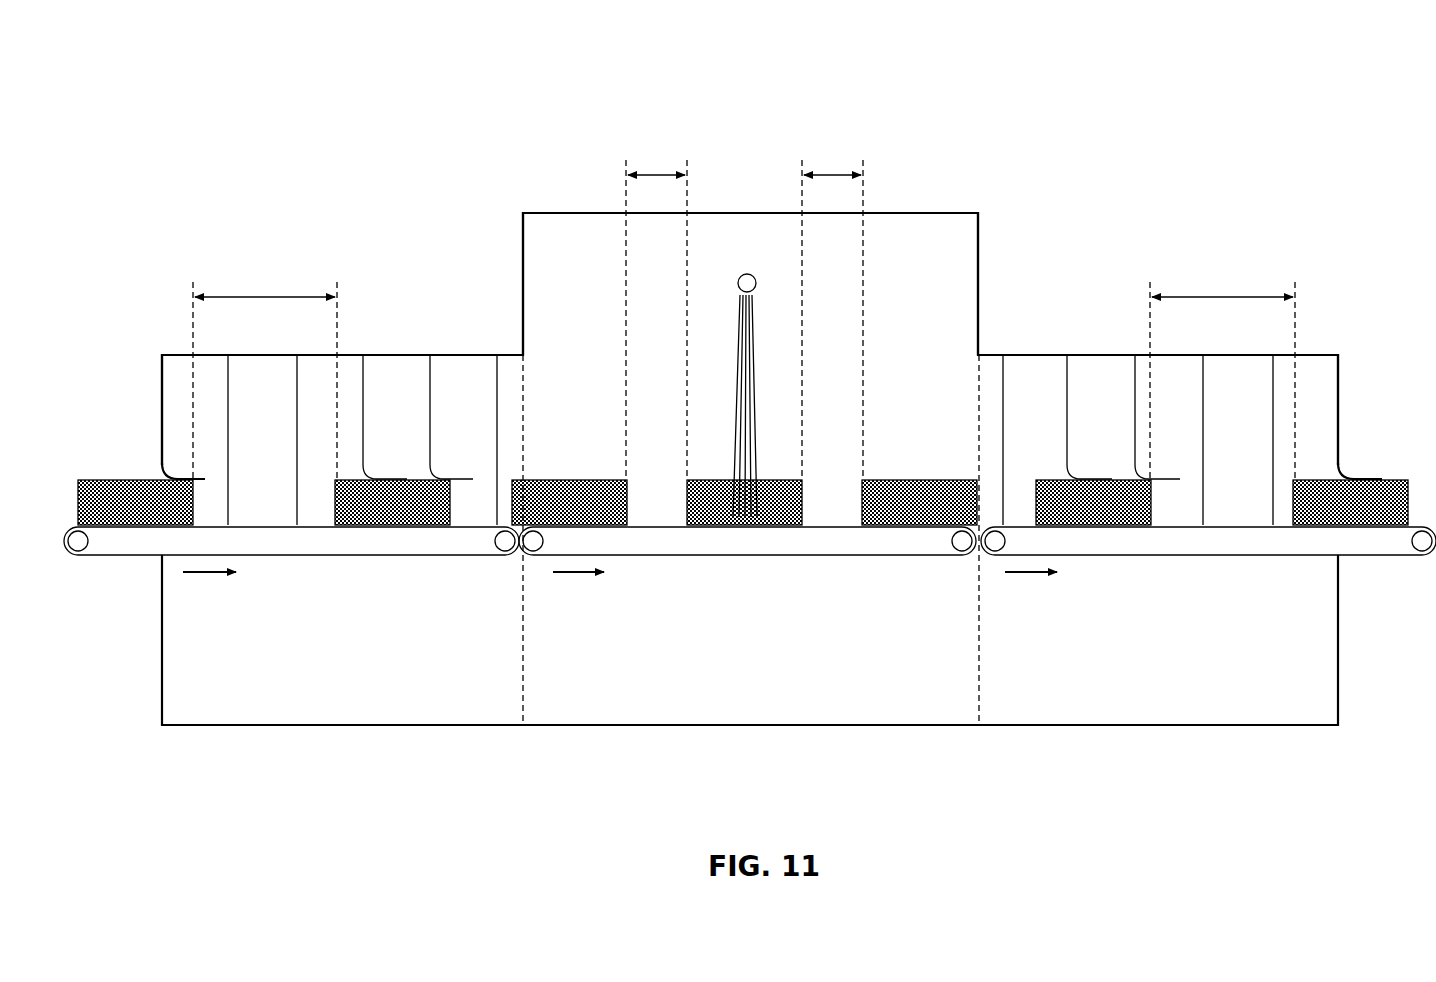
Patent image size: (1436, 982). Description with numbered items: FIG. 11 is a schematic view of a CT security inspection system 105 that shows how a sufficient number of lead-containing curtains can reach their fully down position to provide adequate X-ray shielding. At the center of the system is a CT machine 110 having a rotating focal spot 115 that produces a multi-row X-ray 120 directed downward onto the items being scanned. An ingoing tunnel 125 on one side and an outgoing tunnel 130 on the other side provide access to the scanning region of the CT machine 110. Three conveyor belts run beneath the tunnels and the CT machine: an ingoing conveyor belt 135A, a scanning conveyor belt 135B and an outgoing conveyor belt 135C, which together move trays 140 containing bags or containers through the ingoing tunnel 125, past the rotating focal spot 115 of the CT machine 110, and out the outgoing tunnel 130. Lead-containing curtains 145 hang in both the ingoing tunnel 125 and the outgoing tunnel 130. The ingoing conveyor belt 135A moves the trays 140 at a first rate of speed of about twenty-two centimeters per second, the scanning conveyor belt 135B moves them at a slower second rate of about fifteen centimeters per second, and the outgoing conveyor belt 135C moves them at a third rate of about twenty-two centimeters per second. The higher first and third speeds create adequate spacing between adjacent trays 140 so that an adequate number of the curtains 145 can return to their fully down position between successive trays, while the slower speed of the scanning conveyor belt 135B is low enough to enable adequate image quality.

The CT security inspection system 105 is at (311, 127).
The CT machine 110 is at (577, 208).
The rotating focal spot 115 is at (749, 266).
The multi-row X-ray 120 is at (766, 456).
The ingoing tunnel 125 is at (470, 372).
The outgoing tunnel 130 is at (1108, 368).
The ingoing conveyor belt 135A is at (433, 556).
The scanning conveyor belt 135B is at (819, 558).
The outgoing conveyor belt 135C is at (1238, 560).
The trays 140 is at (152, 515).
The lead-containing curtains 145 is at (225, 435).